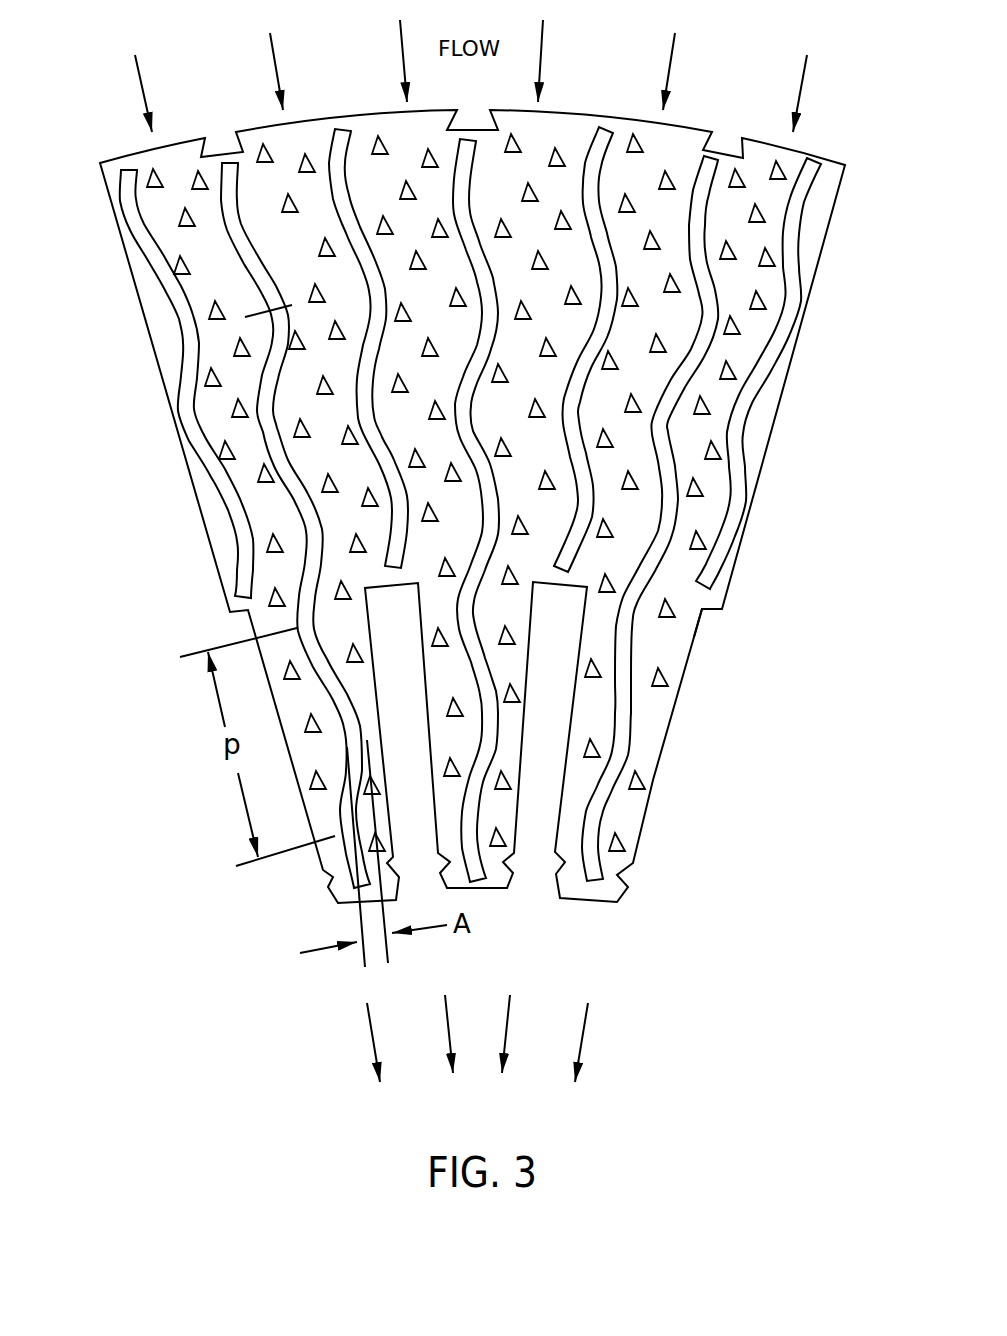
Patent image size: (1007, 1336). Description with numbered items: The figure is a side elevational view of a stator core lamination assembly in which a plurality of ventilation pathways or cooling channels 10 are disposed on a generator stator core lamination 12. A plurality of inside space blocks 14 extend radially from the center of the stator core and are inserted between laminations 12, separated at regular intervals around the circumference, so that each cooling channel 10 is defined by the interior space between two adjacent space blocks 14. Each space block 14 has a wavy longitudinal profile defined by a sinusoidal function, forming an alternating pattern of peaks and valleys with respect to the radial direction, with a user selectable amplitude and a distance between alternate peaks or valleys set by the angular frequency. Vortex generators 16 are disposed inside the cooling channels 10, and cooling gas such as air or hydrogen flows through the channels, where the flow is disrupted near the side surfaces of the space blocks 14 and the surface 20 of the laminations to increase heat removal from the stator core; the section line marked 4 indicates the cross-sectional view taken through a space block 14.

The cooling channels 10 is at (188, 150).
The generator stator core lamination 12 is at (158, 318).
The inside space blocks 14 is at (132, 223).
The vortex generators 16 is at (762, 212).
The surface of the laminations 20 is at (713, 598).
The section line 4- 4 is at (245, 317).